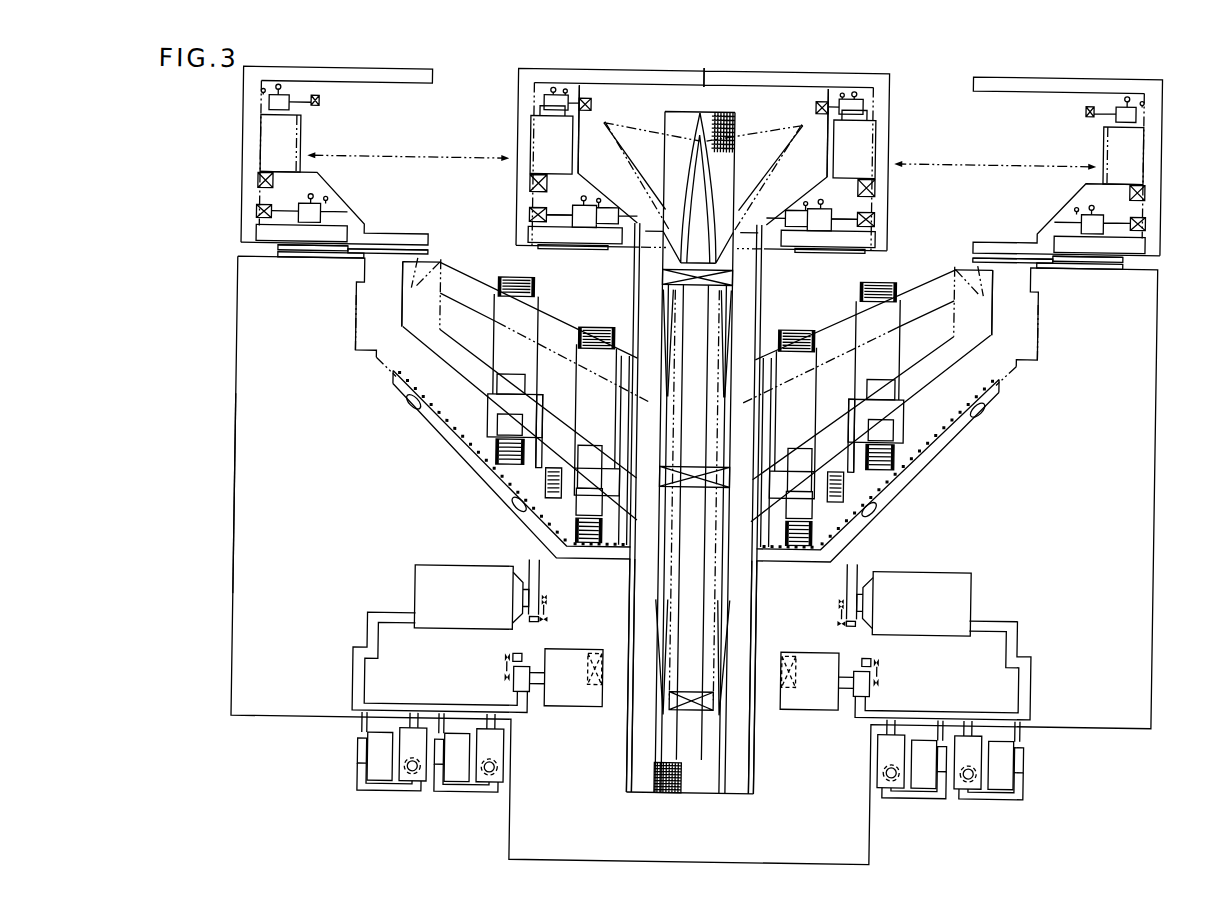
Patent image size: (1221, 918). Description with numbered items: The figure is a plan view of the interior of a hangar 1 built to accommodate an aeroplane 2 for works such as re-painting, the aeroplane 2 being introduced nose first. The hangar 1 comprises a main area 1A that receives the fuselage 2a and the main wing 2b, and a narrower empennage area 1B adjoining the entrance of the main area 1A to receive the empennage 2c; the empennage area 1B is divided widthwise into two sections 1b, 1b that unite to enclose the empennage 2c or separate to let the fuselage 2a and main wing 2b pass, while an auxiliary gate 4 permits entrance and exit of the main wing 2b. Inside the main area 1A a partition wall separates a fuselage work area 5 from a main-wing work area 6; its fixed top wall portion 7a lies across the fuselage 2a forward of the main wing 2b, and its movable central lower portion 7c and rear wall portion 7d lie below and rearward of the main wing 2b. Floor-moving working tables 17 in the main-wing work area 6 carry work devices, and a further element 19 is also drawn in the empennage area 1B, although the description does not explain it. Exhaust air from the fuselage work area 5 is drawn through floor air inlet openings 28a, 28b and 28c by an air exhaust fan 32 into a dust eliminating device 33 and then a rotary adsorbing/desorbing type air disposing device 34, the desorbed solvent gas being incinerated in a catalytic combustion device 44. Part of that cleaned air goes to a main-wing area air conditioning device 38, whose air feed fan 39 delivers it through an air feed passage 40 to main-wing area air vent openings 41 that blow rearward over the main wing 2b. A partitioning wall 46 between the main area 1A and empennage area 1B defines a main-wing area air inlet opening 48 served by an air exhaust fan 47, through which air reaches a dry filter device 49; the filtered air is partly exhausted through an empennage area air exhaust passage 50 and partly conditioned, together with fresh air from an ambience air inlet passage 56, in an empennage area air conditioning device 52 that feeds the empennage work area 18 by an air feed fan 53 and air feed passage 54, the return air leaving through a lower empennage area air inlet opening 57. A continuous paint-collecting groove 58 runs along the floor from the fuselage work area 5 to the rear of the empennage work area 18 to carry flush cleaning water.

The hangar 1 is at (238, 478).
The main area 1A is at (241, 530).
The empennage area 1B is at (766, 36).
The sections 1b is at (243, 141).
The aeroplane 2 is at (663, 580).
The fuselage 2a is at (735, 583).
The main wing 2b is at (455, 380).
The empennage 2c is at (643, 117).
The auxiliary gate 4 is at (697, 299).
The fuselage work area 5 is at (642, 750).
The main-wing work area 6 is at (433, 372).
The top wall portion 7a is at (636, 628).
The central lower portion 7c is at (628, 402).
The rear wall portion 7d is at (636, 258).
The working tables 17 is at (532, 312).
The empennage work area 18 is at (802, 103).
The support arm 19 is at (581, 148).
The floor air inlet opening 28a is at (665, 705).
The floor air inlet opening 28b is at (692, 488).
The floor air inlet opening 28c is at (697, 289).
The air exhaust fan 32 is at (513, 683).
The dust eliminating device 33 is at (571, 708).
The rotary adsorbing/desorbing type air disposing device 34 is at (422, 790).
The main-wing area air conditioning device 38 is at (692, 600).
The air feed fan 39 is at (545, 598).
The air feed passage 40 is at (523, 550).
The main-wing area air vent openings 41 is at (420, 412).
The catalytic combustion device 44 is at (368, 780).
The partitioning wall 46 is at (512, 262).
The air exhaust fan 47 is at (596, 206).
The main-wing area air inlet opening 48 is at (556, 254).
The dry filter device 49 is at (530, 236).
The empennage area air exhaust passage 50 is at (530, 214).
The empennage area air conditioning device 52 is at (518, 127).
The air feed fan 53 is at (518, 100).
The air feed passage 54 is at (588, 100).
The ambience air inlet passage 56 is at (530, 185).
The empennage area air inlet opening 57 is at (618, 227).
The paint-collecting groove 58 is at (705, 777).